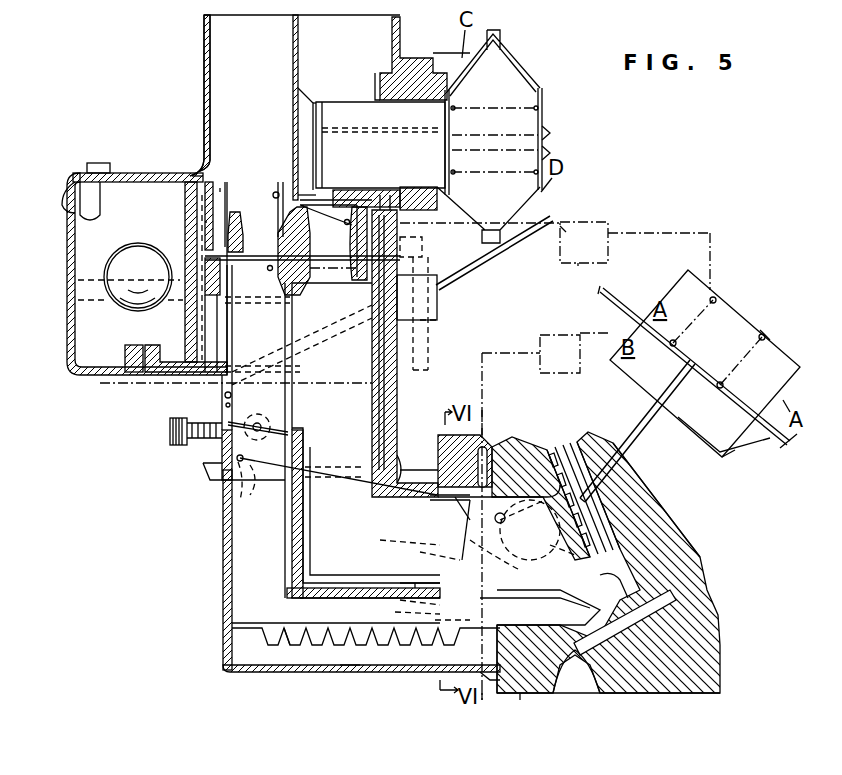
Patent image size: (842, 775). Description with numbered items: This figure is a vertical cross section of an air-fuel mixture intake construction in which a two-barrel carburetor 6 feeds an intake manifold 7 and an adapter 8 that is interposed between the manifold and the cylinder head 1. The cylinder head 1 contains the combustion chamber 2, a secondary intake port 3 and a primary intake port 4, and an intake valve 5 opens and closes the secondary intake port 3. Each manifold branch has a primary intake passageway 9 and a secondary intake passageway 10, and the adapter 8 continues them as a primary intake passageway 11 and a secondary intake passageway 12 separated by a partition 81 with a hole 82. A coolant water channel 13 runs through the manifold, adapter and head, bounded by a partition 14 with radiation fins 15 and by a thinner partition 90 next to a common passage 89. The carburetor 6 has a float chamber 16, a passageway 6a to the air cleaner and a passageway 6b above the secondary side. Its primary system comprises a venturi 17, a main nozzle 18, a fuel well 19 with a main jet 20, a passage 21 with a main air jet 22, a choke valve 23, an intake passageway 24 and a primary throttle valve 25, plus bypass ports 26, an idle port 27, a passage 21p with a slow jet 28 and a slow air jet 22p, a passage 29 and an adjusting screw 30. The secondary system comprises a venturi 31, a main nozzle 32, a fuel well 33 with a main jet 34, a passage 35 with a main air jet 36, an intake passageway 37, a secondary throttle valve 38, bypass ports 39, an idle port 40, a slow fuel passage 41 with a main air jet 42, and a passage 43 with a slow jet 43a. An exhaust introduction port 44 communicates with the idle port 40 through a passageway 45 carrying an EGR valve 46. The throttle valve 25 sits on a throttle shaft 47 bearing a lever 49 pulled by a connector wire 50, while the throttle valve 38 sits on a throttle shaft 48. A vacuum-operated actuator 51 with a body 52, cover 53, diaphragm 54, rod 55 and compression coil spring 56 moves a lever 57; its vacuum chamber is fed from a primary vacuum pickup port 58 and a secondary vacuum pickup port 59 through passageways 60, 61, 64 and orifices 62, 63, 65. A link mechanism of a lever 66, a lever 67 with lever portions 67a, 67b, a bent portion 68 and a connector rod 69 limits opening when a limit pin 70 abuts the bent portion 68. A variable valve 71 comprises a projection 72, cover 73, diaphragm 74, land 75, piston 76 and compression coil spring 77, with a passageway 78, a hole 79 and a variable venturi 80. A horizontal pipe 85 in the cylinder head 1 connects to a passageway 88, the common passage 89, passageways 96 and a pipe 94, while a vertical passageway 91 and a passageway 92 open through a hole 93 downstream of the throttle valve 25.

The cylinder head 1 is at (695, 585).
The combustion chamber 2 is at (608, 668).
The secondary intake port 3 is at (637, 547).
The primary intake port 4 is at (548, 606).
The intake valve 5 is at (632, 625).
The two-barrel carburetor 6 is at (193, 96).
The passageway 6a is at (262, 107).
The passageway 6b is at (320, 190).
The intake manifold 7 is at (223, 568).
The adapter 8 is at (481, 700).
The primary intake passageway 9 is at (258, 546).
The secondary intake passageway 10 is at (362, 440).
The primary intake passageway 11 is at (440, 620).
The secondary intake passageway 12 is at (420, 580).
The coolant water channel 13 is at (350, 660).
The partition 14 is at (295, 632).
The radiation fins 15 is at (290, 648).
The float chamber 16 is at (217, 273).
The venturi 17 is at (238, 238).
The main nozzle 18 is at (256, 256).
The fuel well 19 is at (207, 310).
The main jet 20 is at (160, 345).
The passage 21 is at (224, 212).
The passage 21p is at (205, 222).
The main air jet 22 is at (222, 188).
The slow air jet 22p is at (193, 175).
The choke valve 23 is at (276, 191).
The intake passageway 24 is at (299, 320).
The primary throttle valve 25 is at (255, 461).
The bypass ports 26 is at (224, 396).
The idle port 27 is at (205, 463).
The slow jet 28 is at (203, 250).
The passage 29 is at (215, 338).
The screw 30 is at (170, 433).
The venturi 31 is at (352, 204).
The main nozzle 32 is at (290, 297).
The fuel well 33 is at (430, 352).
The main jet 34 is at (134, 345).
The passage 35 is at (393, 205).
The main air jet 36 is at (380, 196).
The intake passageway 37 is at (287, 340).
The secondary throttle valve 38 is at (455, 510).
The bypass ports 39 is at (430, 475).
The idle port 40 is at (430, 497).
The slow fuel passage 41 is at (397, 408).
The main air jet 42 is at (392, 196).
The passage 43 is at (422, 243).
The slow jet 43a is at (437, 290).
The exhaust introduction port 44 is at (490, 460).
The passageway 45 is at (490, 358).
The EGR valve 46 is at (575, 374).
The throttle shaft 47 is at (285, 430).
The throttle shaft 48 is at (465, 505).
The lever 49 is at (259, 420).
The connector wire 50 is at (456, 278).
The vacuum-operated actuator 51 is at (757, 320).
The body 52 is at (735, 452).
The cover 53 is at (778, 350).
The diaphragm 54 is at (740, 415).
The rod 55 is at (641, 430).
The compression coil spring 56 is at (752, 372).
The lever 57 is at (576, 672).
The primary vacuum pickup port 58 is at (268, 270).
The secondary vacuum pickup port 59 is at (346, 223).
The passageway 60 is at (708, 232).
The passageway 61 is at (505, 262).
The orifice 62 is at (633, 232).
The orifice 63 is at (580, 268).
The passageway 64 is at (562, 220).
The orifice 65 is at (586, 218).
The lever 66 is at (243, 480).
The lever 67 is at (598, 540).
The lever portion 67a is at (562, 506).
The lever portion 67b is at (557, 563).
The bent portion 68 is at (545, 590).
The connector rod 69 is at (313, 478).
The limit pin 70 is at (490, 512).
The variable valve 71 is at (552, 135).
The projection 72 is at (420, 58).
The cover 73 is at (510, 52).
The diaphragm 74 is at (475, 70).
The land 75 is at (300, 95).
The piston 76 is at (350, 102).
The compression coil spring 77 is at (522, 108).
The passageway 78 is at (397, 58).
The hole 79 is at (370, 128).
The variable venturi 80 is at (315, 105).
The partition 81 is at (405, 600).
The hole 82 is at (410, 578).
The horizontal pipe 85 is at (615, 600).
The passageway 88 is at (530, 690).
The common passage 89 is at (480, 672).
The partition 90 is at (500, 690).
The vertical passageway 91 is at (392, 612).
The passageway 92 is at (345, 588).
The hole 93 is at (305, 432).
The pipe 94 is at (445, 560).
The passageways 96 is at (410, 542).